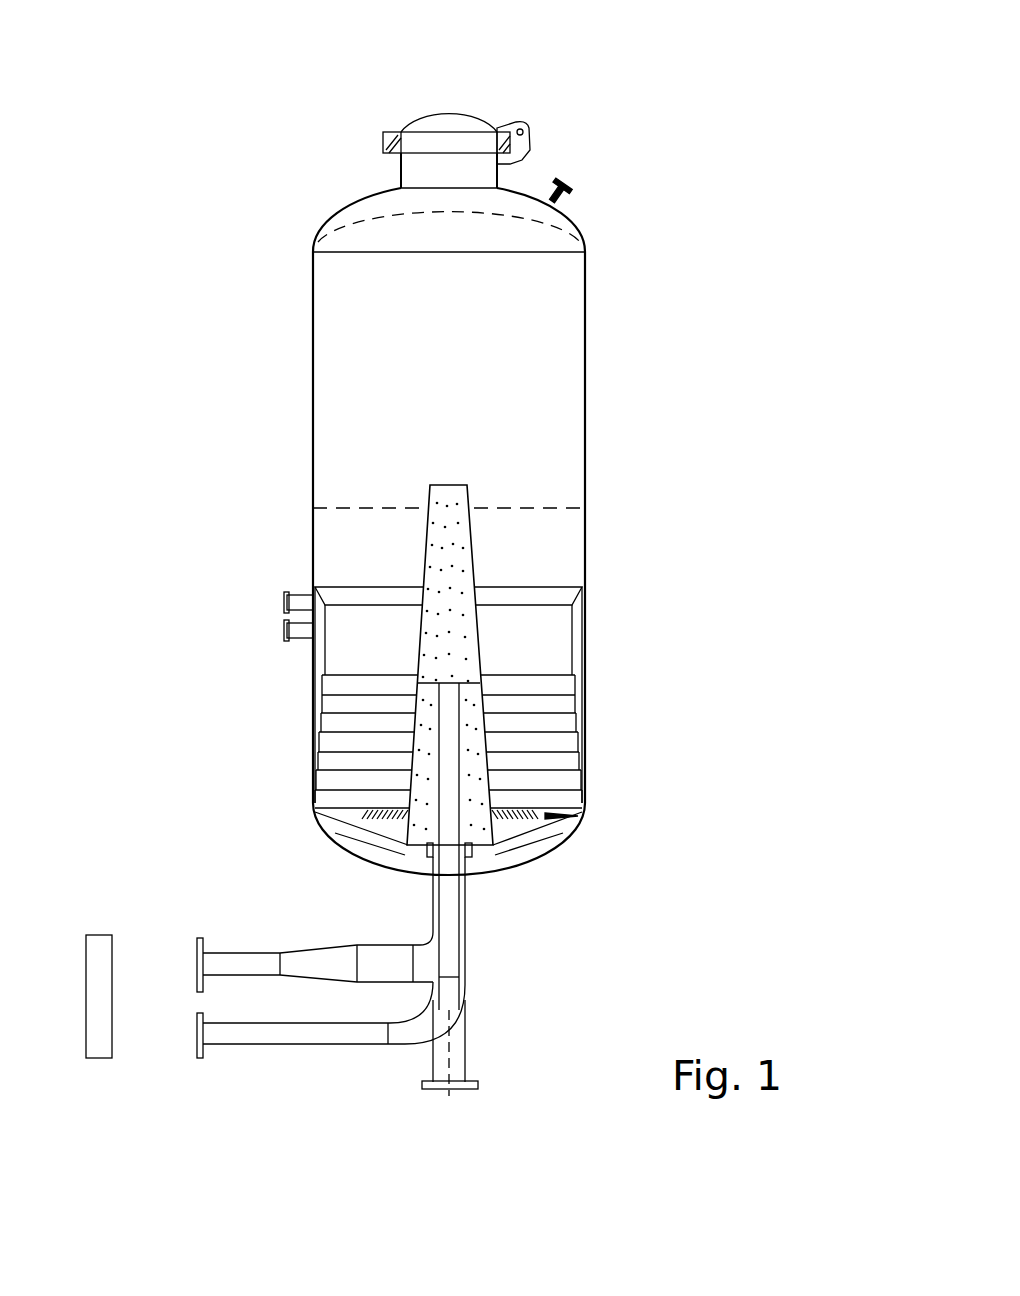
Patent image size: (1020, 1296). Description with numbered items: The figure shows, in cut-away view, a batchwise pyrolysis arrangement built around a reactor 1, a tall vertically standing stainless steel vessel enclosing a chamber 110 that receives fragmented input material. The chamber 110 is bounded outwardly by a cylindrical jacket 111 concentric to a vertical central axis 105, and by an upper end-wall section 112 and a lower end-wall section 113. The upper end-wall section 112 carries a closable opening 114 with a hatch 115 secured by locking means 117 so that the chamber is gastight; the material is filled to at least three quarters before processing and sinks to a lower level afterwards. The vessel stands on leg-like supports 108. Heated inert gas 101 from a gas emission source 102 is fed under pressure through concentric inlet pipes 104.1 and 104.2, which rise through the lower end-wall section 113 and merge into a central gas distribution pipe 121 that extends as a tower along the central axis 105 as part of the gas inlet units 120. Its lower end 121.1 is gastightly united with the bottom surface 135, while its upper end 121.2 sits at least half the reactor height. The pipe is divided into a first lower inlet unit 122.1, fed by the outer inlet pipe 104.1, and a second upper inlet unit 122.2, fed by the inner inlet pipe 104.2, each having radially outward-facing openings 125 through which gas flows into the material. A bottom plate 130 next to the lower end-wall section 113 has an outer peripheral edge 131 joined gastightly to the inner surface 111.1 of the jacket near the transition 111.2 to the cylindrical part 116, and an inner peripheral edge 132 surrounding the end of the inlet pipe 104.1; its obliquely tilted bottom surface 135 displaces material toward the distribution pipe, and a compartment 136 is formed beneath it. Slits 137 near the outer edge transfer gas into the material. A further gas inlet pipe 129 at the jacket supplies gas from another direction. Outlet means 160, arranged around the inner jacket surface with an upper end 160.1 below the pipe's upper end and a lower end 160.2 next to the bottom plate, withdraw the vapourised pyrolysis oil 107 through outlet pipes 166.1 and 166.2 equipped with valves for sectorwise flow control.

The reactor 1 is at (606, 213).
The heated gas 101 is at (181, 965).
The gas emission source 102 is at (97, 1047).
The outer inlet pipe 104.1 is at (288, 960).
The inner inlet pipe 104.2 is at (287, 1037).
The central axis 105 is at (447, 245).
The vapourised pyrolysis oil 107 is at (272, 602).
The leg-like supports 108 is at (462, 1055).
The chamber 110 is at (462, 443).
The jacket 111 is at (310, 322).
The inner surface of the jacket 111.1 is at (316, 407).
The transition 111.2 is at (584, 827).
The upper end-wall section 112 is at (313, 226).
The lower end-wall section 113 is at (354, 863).
The opening 114 is at (347, 178).
The hatch 115 is at (430, 127).
The cylindrical part of the reactor jacket 116 is at (312, 272).
The locking means 117 is at (390, 135).
The gas inlet units 120 is at (462, 664).
The gas distribution pipe 121 is at (426, 563).
The lower end of the gas distribution pipe 121.1 is at (496, 858).
The upper end of the gas distribution pipe 121.2 is at (530, 437).
The first lower inlet unit 122.1 is at (472, 741).
The second upper inlet unit 122.2 is at (448, 535).
The openings 125 is at (427, 650).
The gas inlet pipe 129 is at (556, 193).
The bottom plate 130 is at (360, 830).
The outer peripheral edge 131 is at (311, 809).
The inner peripheral edge 132 is at (426, 858).
The bottom surface 135 is at (352, 817).
The compartment 136 is at (545, 840).
The slits 137 is at (369, 804).
The outlet means 160 is at (548, 679).
The upper end of the outlet means 160.1 is at (599, 585).
The lower end of the outlet means 160.2 is at (598, 808).
The outlet pipe 166.1 is at (286, 596).
The outlet pipe 166.2 is at (286, 626).